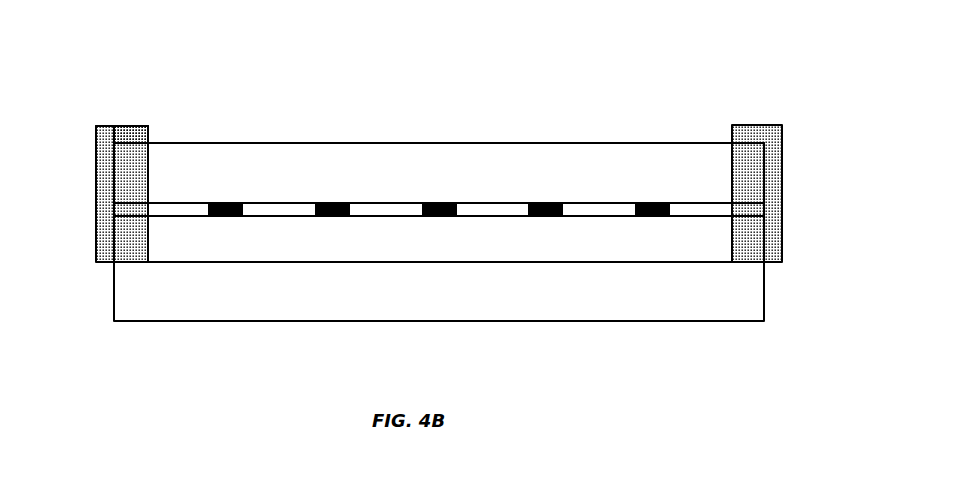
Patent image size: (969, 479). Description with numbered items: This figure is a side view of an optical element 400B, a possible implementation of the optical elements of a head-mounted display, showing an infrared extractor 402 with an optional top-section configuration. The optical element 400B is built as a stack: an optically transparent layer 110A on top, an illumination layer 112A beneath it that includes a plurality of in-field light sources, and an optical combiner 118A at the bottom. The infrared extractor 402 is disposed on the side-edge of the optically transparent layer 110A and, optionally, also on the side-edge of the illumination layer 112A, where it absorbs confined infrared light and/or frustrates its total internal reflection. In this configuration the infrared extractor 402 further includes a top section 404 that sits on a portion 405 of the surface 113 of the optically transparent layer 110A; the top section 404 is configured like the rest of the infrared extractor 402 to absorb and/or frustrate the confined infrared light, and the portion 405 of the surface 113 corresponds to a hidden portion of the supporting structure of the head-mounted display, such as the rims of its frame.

The optical element 400B is at (720, 77).
The infrared extractor 402 is at (100, 183).
The top section 404 is at (148, 130).
The portion 405 is at (150, 97).
The surface 113 is at (413, 142).
The optically transparent layer 110A is at (552, 157).
The illumination layer 112A is at (792, 201).
The optical combiner 118A is at (753, 297).